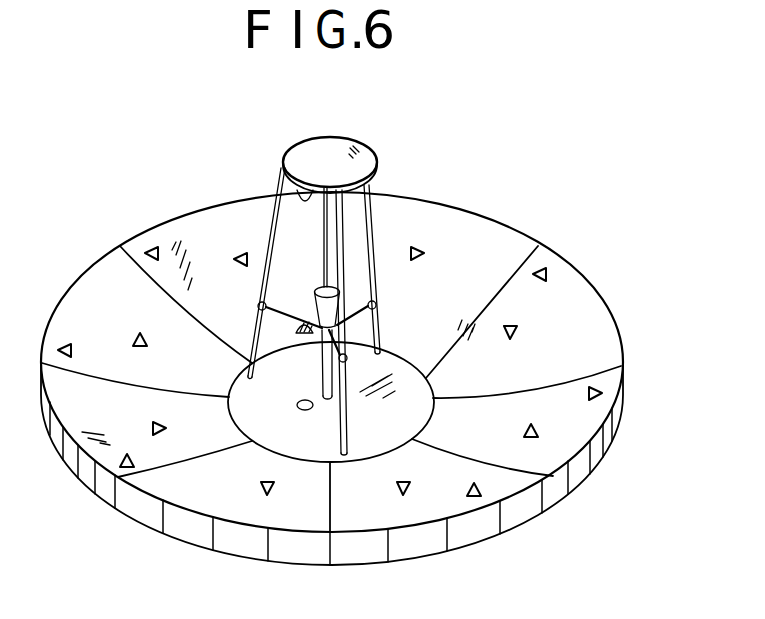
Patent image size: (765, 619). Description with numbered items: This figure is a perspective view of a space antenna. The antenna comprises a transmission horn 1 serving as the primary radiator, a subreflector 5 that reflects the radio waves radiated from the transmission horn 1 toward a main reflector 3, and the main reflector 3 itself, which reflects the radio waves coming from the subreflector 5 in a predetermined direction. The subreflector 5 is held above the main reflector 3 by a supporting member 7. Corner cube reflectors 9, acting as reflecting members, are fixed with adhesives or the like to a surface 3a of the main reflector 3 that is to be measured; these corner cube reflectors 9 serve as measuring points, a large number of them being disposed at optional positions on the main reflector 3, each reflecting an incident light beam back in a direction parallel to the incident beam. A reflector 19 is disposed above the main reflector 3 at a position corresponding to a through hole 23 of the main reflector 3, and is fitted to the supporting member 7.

The transmission horn 1 is at (315, 287).
The main reflector 3 is at (510, 208).
The surface of the main reflector 3a is at (470, 233).
The subreflector 5 is at (282, 183).
The supporting member 7 is at (373, 243).
The corner cube reflectors 9 is at (512, 333).
The reflector 19 is at (307, 335).
The through hole 23 is at (298, 408).